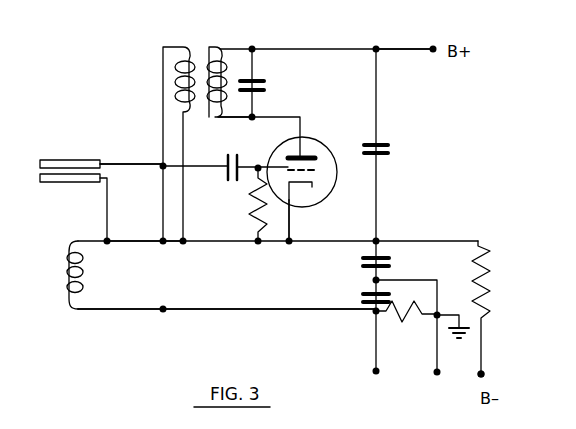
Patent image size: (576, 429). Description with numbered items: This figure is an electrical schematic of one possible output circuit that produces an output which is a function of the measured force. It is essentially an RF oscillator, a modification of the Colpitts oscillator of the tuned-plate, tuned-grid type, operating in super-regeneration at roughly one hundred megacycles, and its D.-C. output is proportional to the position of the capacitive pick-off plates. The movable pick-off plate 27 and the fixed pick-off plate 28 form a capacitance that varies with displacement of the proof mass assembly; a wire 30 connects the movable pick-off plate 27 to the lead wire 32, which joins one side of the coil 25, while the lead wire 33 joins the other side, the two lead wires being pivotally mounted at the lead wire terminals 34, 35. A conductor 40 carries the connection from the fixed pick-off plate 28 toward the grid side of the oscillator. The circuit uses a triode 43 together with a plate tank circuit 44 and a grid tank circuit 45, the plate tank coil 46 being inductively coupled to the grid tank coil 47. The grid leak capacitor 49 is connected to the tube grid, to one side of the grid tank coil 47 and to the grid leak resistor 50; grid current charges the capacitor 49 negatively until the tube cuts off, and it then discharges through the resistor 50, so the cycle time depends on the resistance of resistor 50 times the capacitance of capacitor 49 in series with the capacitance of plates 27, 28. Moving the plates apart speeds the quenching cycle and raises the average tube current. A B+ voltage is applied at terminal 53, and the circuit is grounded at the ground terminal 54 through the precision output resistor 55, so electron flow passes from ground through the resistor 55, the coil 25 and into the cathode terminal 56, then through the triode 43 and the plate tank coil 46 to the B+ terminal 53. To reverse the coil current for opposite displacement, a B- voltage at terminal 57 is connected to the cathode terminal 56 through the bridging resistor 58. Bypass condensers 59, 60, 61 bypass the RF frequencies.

The coil 25 is at (66, 268).
The movable pick-off plate 27 is at (78, 182).
The fixed pick-off plate 28 is at (62, 159).
The wire 30 is at (109, 203).
The lead wire 32 is at (130, 242).
The lead wire 33 is at (106, 310).
The lead wire terminal 34 is at (164, 243).
The lead wire terminal 35 is at (166, 312).
The conductor 40 is at (120, 163).
The triode 43 is at (310, 146).
The plate tank circuit 44 is at (268, 85).
The grid tank circuit 45 is at (213, 216).
The plate tank coil 46 is at (221, 81).
The grid tank coil 47 is at (178, 82).
The grid leak capacitor 49 is at (228, 156).
The grid leak resistor 50 is at (255, 209).
The B+ terminal 53 is at (437, 45).
The ground terminal 54 is at (458, 340).
The precision output resistor 55 is at (403, 322).
The cathode terminal 56 is at (290, 244).
The B- terminal 57 is at (486, 373).
The bridging resistor 58 is at (486, 273).
The bypass condenser 59 is at (390, 144).
The bypass condenser 60 is at (362, 259).
The bypass condenser 61 is at (362, 296).